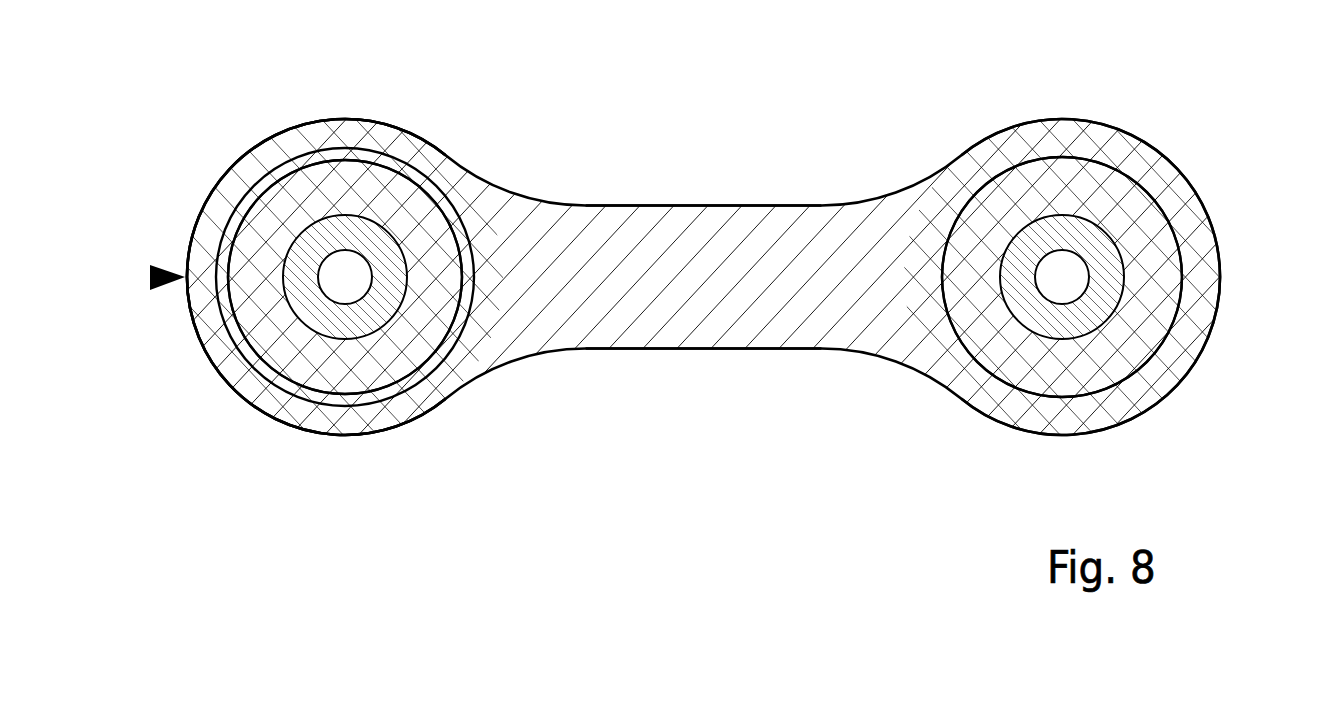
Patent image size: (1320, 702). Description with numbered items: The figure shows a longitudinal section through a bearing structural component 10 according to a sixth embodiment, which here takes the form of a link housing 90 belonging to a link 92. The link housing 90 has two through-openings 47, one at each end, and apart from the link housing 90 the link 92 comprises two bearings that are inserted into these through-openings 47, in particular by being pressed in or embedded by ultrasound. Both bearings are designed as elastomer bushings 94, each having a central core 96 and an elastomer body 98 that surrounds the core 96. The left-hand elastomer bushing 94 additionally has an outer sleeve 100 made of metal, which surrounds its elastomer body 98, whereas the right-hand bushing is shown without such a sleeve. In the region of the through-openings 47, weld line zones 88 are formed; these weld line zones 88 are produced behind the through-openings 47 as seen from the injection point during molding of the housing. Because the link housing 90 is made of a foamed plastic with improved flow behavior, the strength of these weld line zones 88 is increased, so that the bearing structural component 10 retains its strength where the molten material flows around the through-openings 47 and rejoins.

The bearing structural component 10 is at (710, 195).
The through-openings 47 is at (238, 196).
The weld line zones 88 is at (595, 281).
The link housing 90 is at (733, 318).
The link 92 is at (786, 203).
The elastomer bushings 94 is at (372, 150).
The core 96 is at (363, 313).
The elastomer body 98 is at (423, 325).
The outer sleeve 100 is at (243, 367).